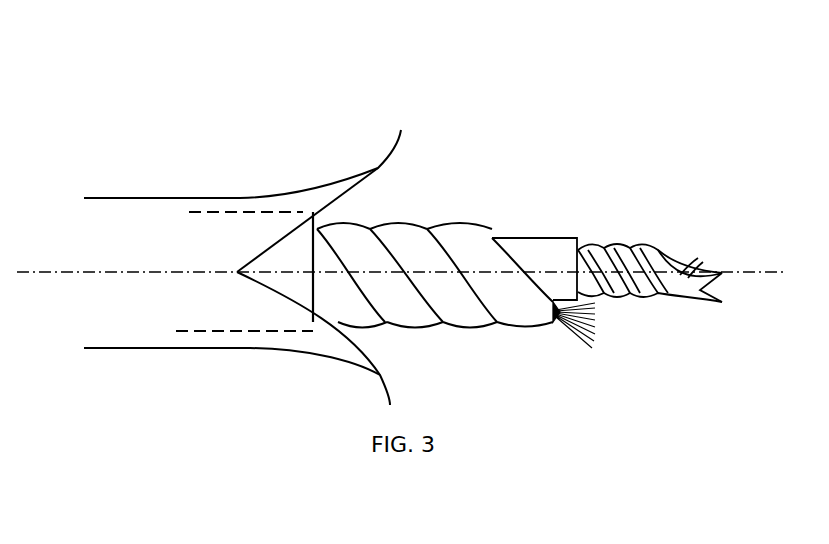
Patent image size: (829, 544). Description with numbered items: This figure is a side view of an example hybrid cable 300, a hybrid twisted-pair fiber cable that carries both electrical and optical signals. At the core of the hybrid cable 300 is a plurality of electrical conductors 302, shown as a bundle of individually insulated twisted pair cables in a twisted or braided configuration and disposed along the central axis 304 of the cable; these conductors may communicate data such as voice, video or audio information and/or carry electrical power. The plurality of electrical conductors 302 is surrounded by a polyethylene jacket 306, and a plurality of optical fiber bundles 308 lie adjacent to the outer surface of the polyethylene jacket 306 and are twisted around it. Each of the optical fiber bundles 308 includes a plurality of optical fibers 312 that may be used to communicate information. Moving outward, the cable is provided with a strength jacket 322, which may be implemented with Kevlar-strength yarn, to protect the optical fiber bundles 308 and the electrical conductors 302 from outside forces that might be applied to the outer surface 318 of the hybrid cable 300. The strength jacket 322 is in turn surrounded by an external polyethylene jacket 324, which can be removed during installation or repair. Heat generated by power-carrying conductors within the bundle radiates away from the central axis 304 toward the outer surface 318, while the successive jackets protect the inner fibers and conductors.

The hybrid cable 300 is at (172, 95).
The plurality of electrical conductors 302 is at (623, 232).
The central axis 304 is at (84, 272).
The polyethylene jacket 306 is at (515, 237).
The optical fiber bundles 308 is at (398, 222).
The optical fibers 312 is at (600, 302).
The outer surface 318 is at (170, 348).
The strength jacket 322 is at (300, 254).
The external polyethylene jacket 324 is at (291, 344).